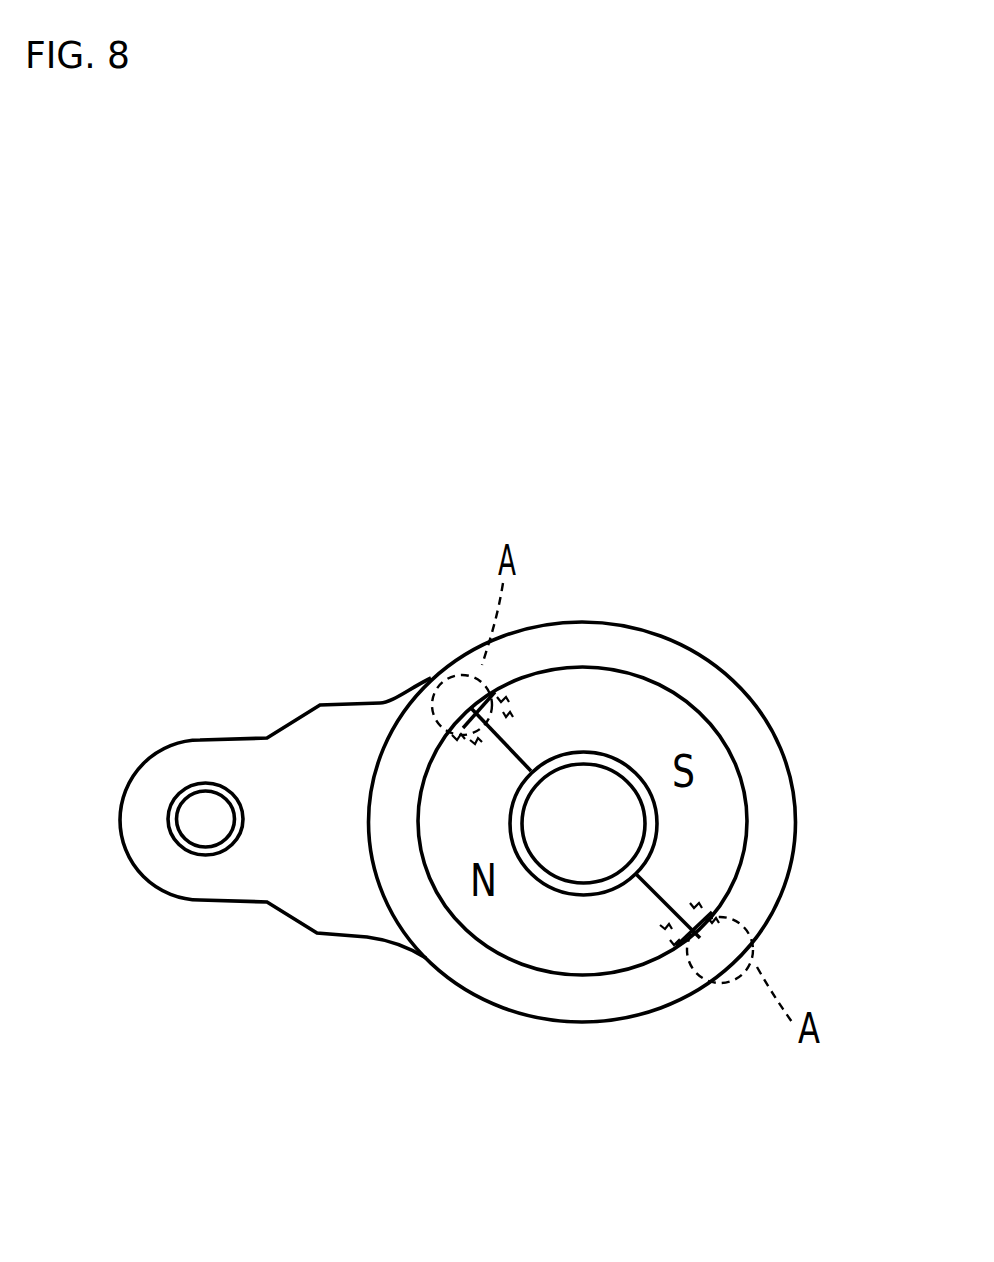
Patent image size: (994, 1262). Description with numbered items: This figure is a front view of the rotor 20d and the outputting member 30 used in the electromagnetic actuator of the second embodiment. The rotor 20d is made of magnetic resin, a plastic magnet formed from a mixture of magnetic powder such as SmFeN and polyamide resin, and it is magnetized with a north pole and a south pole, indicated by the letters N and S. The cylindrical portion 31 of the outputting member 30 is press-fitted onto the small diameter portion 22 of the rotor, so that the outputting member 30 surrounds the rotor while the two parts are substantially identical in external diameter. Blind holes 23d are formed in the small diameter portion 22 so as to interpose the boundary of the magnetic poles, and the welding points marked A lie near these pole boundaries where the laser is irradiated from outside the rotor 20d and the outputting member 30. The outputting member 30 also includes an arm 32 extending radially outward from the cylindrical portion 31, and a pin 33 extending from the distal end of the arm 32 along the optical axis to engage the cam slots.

The outputting member 30 is at (766, 718).
The cylindrical portion 31 is at (775, 877).
The arm 32 is at (340, 752).
The pin 33 is at (207, 817).
The rotor 20d is at (532, 972).
The small diameter portion 22 is at (627, 940).
The blind holes 23d is at (430, 682).